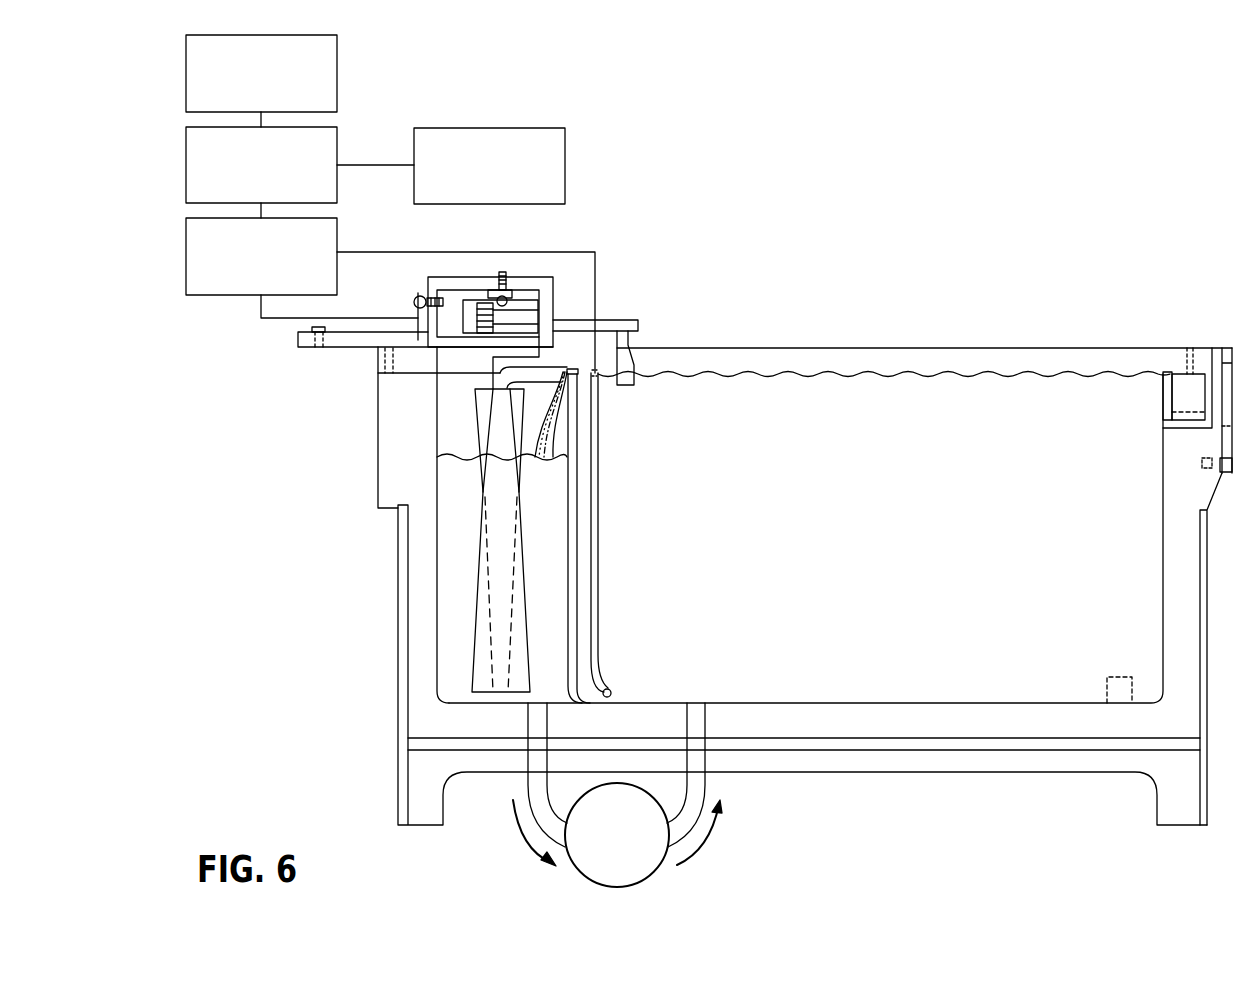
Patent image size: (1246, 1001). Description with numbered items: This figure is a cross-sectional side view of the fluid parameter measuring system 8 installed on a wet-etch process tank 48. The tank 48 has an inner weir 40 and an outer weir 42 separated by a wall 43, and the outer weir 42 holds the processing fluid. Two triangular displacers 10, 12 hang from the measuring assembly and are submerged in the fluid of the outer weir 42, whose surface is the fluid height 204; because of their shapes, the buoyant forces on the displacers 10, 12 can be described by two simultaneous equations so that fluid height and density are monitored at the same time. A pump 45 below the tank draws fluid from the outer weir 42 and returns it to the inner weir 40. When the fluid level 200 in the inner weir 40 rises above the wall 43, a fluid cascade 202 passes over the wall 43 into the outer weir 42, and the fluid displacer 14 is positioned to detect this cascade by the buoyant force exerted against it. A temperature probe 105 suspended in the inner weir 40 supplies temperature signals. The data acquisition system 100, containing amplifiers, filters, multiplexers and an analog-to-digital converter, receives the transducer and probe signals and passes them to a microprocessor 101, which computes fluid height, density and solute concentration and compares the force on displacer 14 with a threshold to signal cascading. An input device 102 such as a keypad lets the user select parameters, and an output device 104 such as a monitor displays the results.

The fluid parameter measuring system 8 is at (568, 287).
The triangular displacer 10 is at (477, 673).
The triangular displacer 12 is at (490, 557).
The fluid displacer 14 is at (635, 367).
The inner weir 40 is at (855, 680).
The outer weir 42 is at (447, 632).
The wall 43 is at (572, 610).
The pump 45 is at (640, 888).
The wet-etch process tank 48 is at (372, 455).
The data acquisition system 100 is at (338, 240).
The microprocessor 101 is at (338, 143).
The input device 102 is at (338, 87).
The output device 104 is at (565, 167).
The temperature probe 105 is at (595, 485).
The fluid level 200 is at (892, 368).
The fluid cascade 202 is at (560, 422).
The fluid height 204 is at (447, 455).